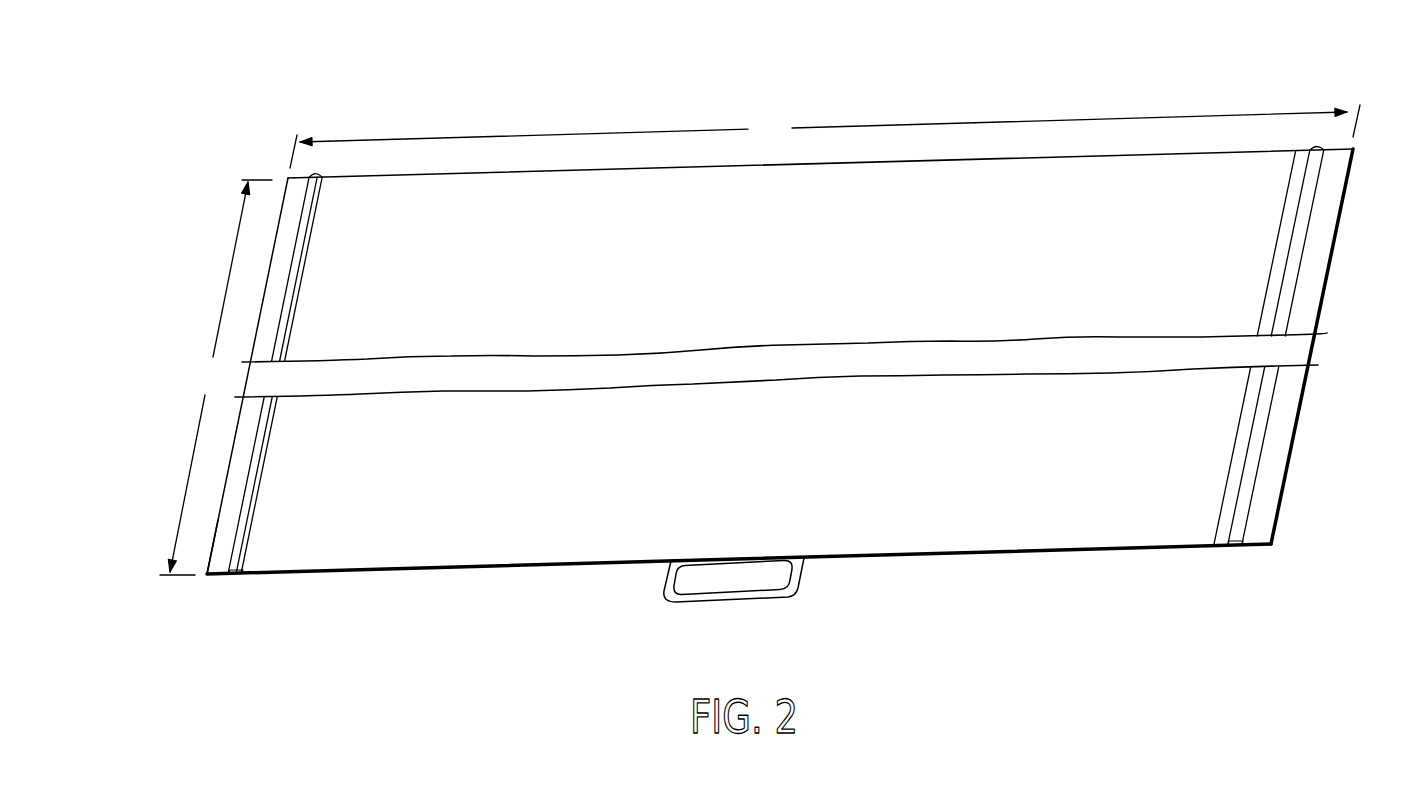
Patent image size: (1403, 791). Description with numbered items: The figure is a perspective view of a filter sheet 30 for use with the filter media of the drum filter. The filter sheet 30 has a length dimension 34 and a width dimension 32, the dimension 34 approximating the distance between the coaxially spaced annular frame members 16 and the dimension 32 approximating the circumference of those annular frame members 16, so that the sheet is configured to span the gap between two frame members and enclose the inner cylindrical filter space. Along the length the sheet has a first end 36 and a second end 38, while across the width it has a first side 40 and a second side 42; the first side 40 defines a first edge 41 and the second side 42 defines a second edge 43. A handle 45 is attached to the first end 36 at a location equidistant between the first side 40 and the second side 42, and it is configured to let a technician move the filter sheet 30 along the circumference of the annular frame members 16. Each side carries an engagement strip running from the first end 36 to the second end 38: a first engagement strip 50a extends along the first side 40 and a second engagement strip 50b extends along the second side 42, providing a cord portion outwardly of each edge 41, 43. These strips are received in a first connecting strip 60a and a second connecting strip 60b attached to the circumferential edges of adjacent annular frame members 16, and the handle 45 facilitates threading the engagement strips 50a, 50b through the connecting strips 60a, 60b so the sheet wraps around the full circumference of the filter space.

The filter sheet 30 is at (744, 477).
The second end 38 is at (398, 173).
The first end 36 is at (358, 570).
The annular frame member 16 is at (218, 543).
The first connecting strip 60a is at (253, 481).
The second connecting strip 60b is at (1248, 468).
The first engagement strip 50a is at (243, 575).
The second engagement strip 50b is at (1238, 528).
The first side 40 is at (252, 550).
The first edge 41 is at (255, 507).
The second side 42 is at (1208, 528).
The second edge 43 is at (1220, 495).
The handle 45 is at (782, 597).
The length dimension 34 is at (825, 136).
The width dimension 32 is at (216, 377).